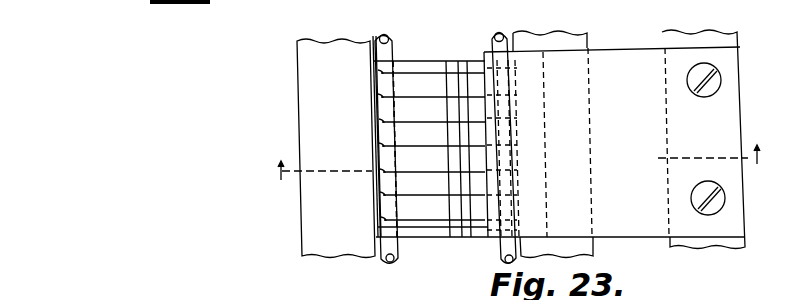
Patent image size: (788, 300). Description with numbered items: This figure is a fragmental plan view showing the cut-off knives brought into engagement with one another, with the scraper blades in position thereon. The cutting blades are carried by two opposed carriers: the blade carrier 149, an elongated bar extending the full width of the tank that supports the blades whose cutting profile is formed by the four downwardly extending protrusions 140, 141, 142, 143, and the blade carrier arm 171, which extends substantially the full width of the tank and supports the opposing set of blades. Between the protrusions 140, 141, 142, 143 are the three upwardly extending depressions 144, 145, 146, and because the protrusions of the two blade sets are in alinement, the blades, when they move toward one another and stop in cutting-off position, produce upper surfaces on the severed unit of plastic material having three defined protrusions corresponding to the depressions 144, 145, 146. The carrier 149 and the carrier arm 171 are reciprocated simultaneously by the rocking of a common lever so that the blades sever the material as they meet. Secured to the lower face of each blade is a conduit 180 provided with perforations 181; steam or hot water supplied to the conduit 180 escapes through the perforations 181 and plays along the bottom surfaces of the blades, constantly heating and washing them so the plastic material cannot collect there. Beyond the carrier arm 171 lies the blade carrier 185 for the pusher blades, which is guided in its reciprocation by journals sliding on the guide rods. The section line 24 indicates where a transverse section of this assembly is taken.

The section line 24- 24 is at (517, 162).
The downwardly extending protrusion 140 is at (380, 70).
The downwardly extending protrusion 141 is at (380, 121).
The downwardly extending protrusion 142 is at (380, 172).
The downwardly extending protrusion 143 is at (380, 218).
The upwardly extending depression 144 is at (380, 96).
The upwardly extending depression 145 is at (380, 145).
The upwardly extending depression 146 is at (380, 197).
The blade carrier 149 is at (336, 148).
The blade carrier arm 171 is at (553, 144).
The conduit 180 is at (386, 51).
The perforations 181 is at (393, 96).
The blade carrier 185 is at (724, 13).